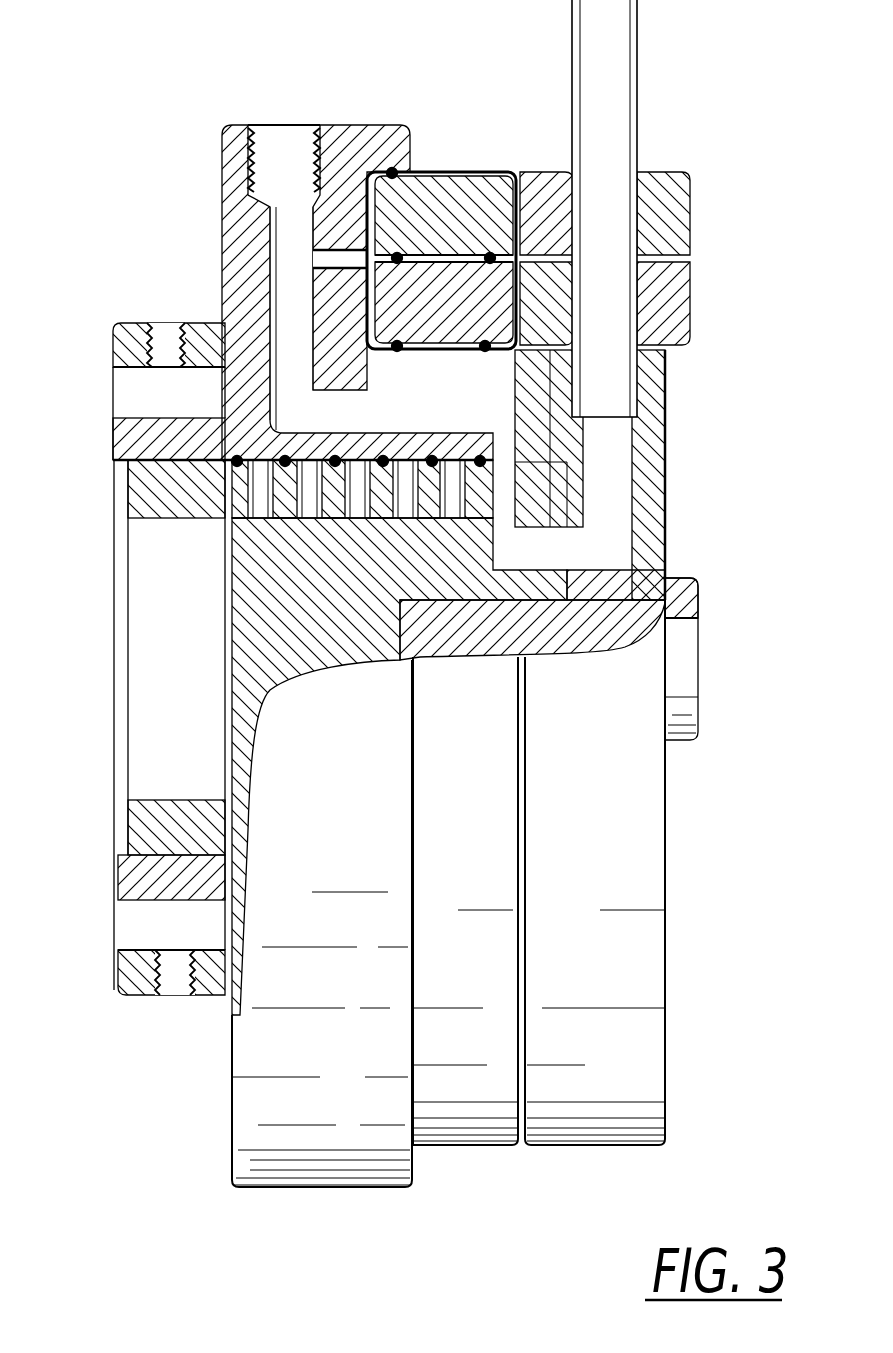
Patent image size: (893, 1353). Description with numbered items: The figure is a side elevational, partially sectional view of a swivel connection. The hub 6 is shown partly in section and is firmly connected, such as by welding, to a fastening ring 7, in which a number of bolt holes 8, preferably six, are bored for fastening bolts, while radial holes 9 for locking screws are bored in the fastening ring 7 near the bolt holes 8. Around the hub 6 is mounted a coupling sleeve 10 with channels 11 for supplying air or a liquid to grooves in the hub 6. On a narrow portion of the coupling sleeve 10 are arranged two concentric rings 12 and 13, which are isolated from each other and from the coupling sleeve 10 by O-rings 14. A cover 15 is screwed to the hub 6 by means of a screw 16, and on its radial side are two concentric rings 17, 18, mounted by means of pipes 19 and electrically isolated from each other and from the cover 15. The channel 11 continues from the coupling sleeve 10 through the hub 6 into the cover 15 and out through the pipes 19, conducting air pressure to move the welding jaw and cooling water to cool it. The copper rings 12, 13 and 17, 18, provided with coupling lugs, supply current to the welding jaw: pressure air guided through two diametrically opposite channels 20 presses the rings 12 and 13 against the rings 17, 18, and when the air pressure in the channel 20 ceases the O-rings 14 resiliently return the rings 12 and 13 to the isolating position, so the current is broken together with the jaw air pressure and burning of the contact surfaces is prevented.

The hub 6 is at (258, 578).
The fastening ring 7 is at (113, 362).
The bolt holes 8 is at (150, 922).
The radial holes 9 is at (160, 346).
The coupling sleeve 10 is at (233, 158).
The channel 11 is at (285, 248).
The concentric ring 12 is at (437, 285).
The concentric ring 13 is at (455, 185).
The O-rings 14 is at (390, 170).
The cover 15 is at (655, 468).
The screw 16 is at (680, 593).
The concentric ring 17 is at (678, 298).
The concentric ring 18 is at (678, 208).
The pipes 19 is at (613, 80).
The channel 20 is at (330, 260).